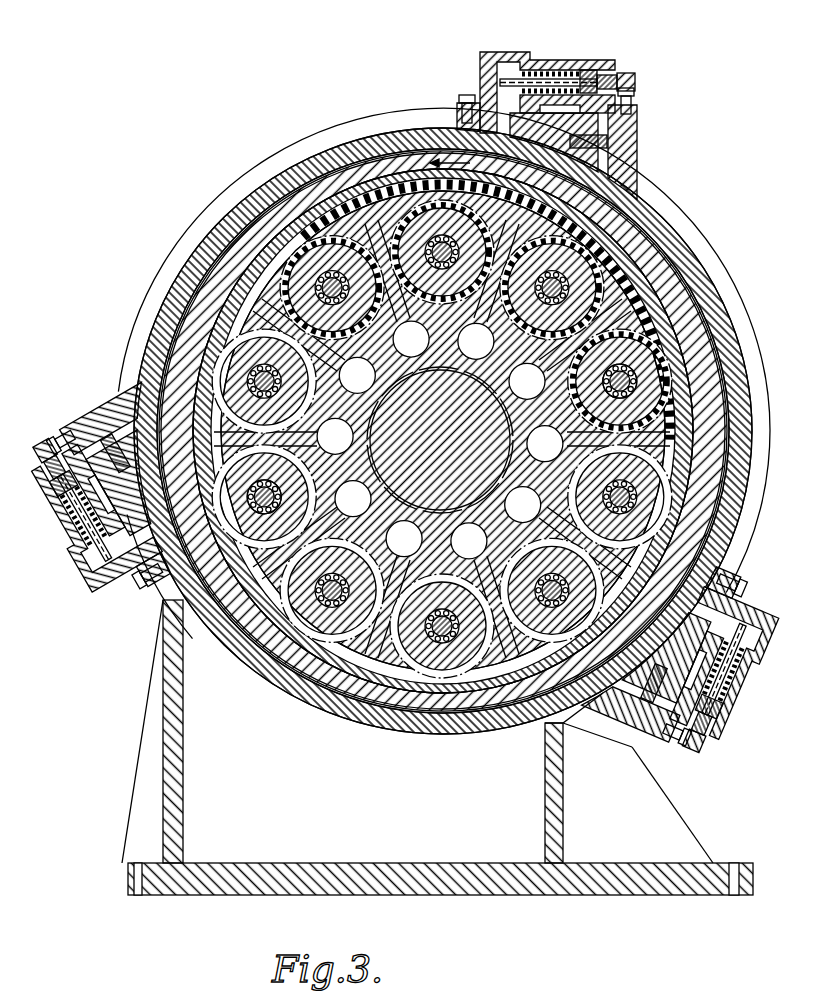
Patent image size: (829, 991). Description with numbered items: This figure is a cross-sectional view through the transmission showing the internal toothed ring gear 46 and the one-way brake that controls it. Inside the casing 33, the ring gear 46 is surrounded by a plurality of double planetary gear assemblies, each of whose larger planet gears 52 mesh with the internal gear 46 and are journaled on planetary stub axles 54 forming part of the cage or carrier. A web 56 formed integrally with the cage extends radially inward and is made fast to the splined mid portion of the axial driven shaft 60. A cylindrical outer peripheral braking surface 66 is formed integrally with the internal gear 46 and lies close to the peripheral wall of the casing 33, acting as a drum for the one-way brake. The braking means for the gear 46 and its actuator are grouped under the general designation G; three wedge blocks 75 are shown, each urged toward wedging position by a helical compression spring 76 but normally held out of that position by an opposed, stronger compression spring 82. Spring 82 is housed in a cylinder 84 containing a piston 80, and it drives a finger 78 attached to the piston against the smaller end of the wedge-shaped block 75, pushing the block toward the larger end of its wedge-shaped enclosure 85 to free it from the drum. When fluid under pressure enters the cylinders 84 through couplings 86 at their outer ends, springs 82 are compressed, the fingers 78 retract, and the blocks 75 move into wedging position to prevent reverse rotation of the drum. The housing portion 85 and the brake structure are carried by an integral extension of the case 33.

The casing 33 is at (683, 255).
The internal toothed ring gear 46 is at (313, 213).
The planet gear 52 is at (600, 292).
The planetary stub axle 54 is at (640, 380).
The web 56 is at (508, 358).
The driven shaft 60 is at (495, 443).
The cylindrical outer peripheral braking surface 66 is at (683, 292).
The wedge block 75 is at (600, 162).
The helical compression spring 76 is at (603, 140).
The finger 78 is at (500, 93).
The piston 80 is at (585, 70).
The compression spring 82 is at (537, 70).
The cylinder 84 is at (590, 72).
The wedge-shaped enclosure 85 is at (620, 177).
The coupling 86 is at (628, 80).
The one-way braking means and actuating means G is at (401, 388).